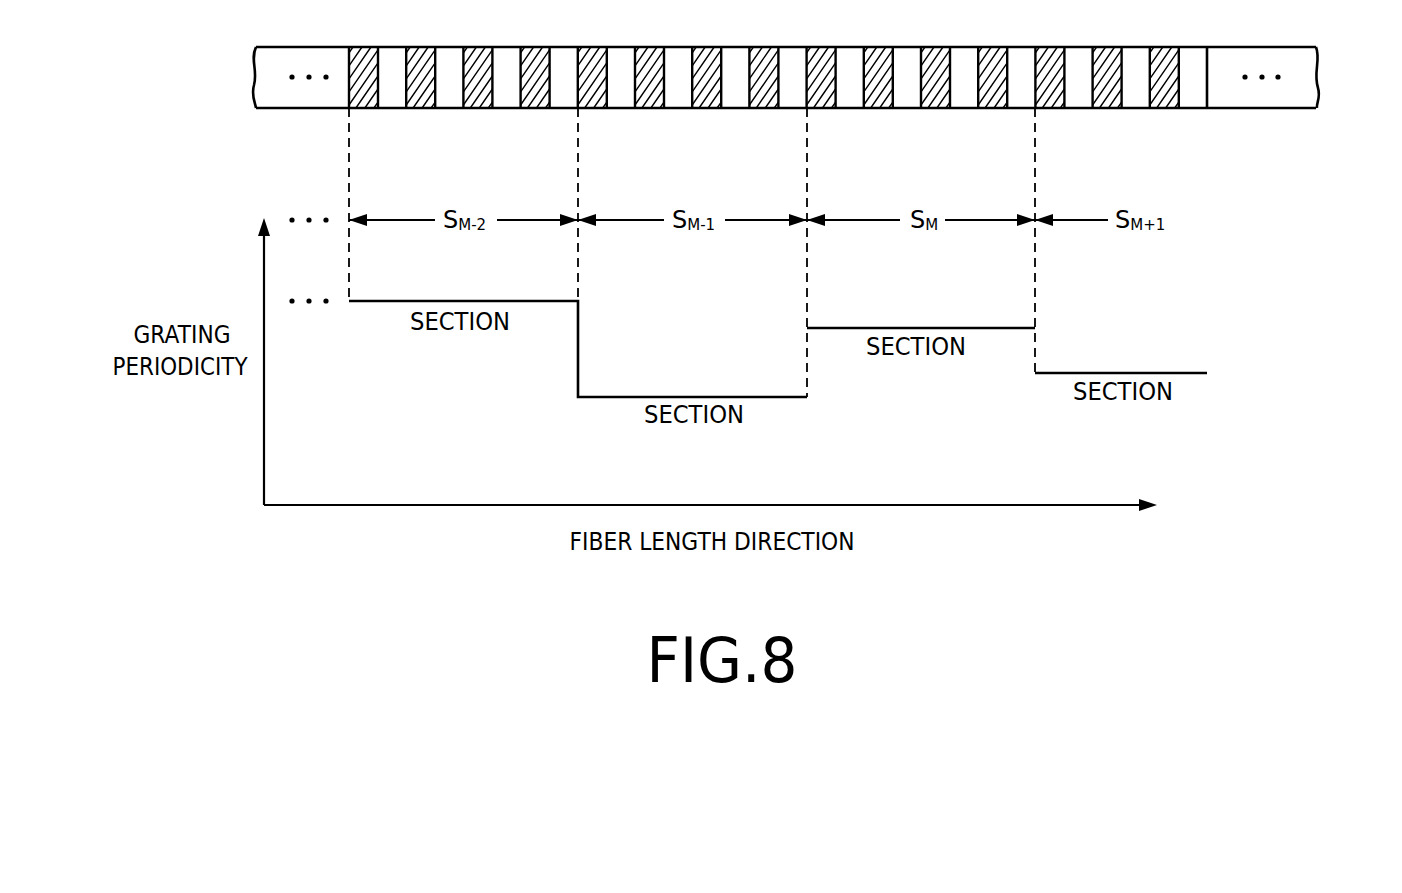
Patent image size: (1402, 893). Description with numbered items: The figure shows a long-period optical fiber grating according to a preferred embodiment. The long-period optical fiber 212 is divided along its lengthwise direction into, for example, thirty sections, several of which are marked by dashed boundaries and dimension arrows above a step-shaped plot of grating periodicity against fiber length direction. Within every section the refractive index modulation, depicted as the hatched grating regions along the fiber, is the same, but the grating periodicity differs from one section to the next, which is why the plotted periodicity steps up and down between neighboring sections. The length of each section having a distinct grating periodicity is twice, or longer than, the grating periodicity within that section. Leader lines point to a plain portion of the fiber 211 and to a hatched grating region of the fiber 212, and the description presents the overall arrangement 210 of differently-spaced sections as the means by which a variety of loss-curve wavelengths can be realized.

The long-period fiber grating device 210 is at (809, 123).
The optical fiber 211 is at (300, 100).
The long-period optical fiber 212 is at (1082, 108).